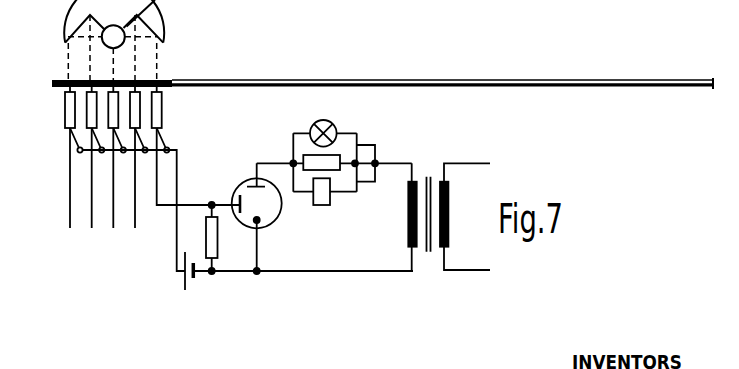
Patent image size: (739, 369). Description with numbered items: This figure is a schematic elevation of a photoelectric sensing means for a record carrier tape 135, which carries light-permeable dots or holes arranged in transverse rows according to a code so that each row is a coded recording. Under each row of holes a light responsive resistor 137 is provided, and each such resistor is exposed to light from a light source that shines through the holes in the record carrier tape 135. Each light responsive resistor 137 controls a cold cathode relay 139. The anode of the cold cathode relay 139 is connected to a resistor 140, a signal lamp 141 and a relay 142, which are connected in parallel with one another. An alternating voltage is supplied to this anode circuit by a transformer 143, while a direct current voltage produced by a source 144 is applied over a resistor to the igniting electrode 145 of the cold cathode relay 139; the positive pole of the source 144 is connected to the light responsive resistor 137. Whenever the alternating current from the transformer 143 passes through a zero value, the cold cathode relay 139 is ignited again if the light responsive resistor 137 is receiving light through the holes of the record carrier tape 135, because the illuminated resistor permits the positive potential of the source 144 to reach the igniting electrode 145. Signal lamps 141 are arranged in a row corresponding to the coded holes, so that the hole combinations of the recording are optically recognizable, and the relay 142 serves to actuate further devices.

The record carrier tape 135 is at (262, 83).
The light responsive resistor 137 is at (129, 157).
The cold cathode relay 139 is at (264, 218).
The resistor 140 is at (338, 160).
The signal lamp 141 is at (333, 133).
The relay 142 is at (320, 200).
The transformer 143 is at (430, 263).
The direct current voltage source 144 is at (190, 285).
The igniting electrode 145 is at (232, 200).